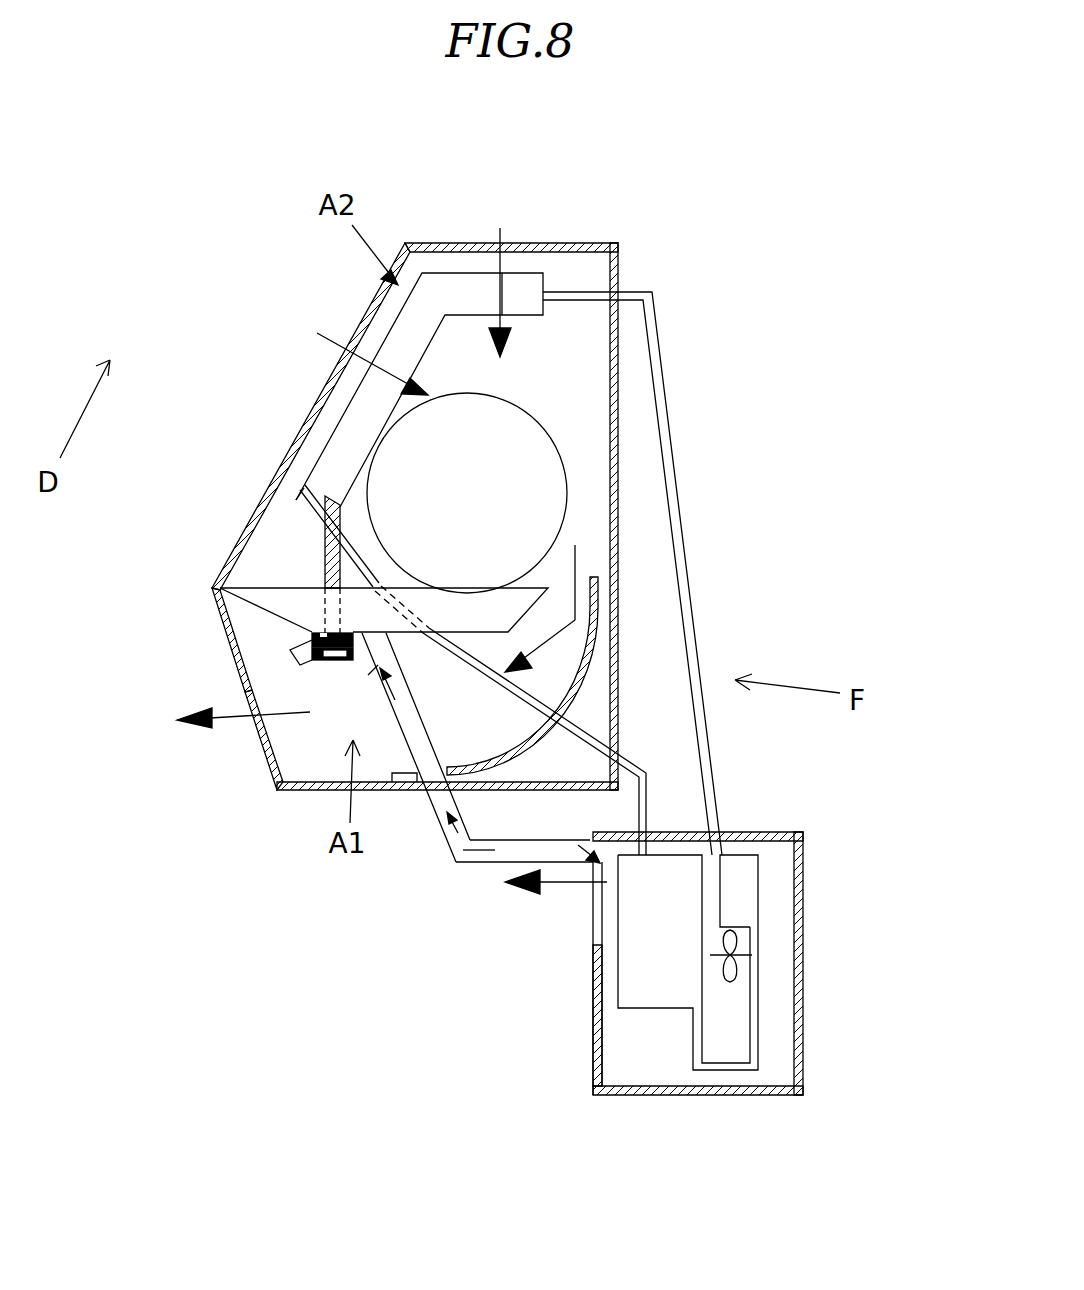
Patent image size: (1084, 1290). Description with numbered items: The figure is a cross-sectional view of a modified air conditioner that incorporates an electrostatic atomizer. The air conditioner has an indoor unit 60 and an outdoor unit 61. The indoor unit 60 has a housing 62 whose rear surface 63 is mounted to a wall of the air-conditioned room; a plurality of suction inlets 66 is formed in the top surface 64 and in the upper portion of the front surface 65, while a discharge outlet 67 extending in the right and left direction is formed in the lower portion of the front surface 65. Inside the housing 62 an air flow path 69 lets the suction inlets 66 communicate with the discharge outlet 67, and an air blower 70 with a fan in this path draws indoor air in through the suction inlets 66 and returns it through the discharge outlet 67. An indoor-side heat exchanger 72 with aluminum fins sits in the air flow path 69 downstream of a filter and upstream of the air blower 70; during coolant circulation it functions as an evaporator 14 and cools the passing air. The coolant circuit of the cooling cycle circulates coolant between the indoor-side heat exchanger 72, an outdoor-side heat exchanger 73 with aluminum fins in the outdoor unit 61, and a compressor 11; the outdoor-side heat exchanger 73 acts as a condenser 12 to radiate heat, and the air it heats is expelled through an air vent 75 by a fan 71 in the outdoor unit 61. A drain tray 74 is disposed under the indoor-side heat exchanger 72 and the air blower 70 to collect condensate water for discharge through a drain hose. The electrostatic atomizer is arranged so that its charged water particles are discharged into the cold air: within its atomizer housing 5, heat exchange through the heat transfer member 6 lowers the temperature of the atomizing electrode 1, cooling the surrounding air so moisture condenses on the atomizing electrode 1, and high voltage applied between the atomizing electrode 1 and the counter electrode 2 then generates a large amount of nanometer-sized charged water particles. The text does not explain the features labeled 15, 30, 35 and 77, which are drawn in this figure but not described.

The atomizing electrode 1 is at (313, 663).
The counter electrode 2 is at (312, 662).
The atomizer housing 5 is at (307, 637).
The heat transfer member 6 is at (318, 487).
The compressor 11 is at (752, 880).
The condenser 12 is at (623, 975).
The evaporator 14 is at (520, 283).
The mist discharge port 15 is at (335, 663).
The housing corner portion 30 is at (220, 588).
The air return duct 35 is at (445, 842).
The indoor unit 60 is at (303, 787).
The outdoor unit 61 is at (593, 1080).
The housing 62 is at (275, 773).
The rear surface 63 is at (618, 342).
The top surface 64 is at (418, 243).
The front surface 65 is at (273, 478).
The suction inlets 66 is at (493, 243).
The discharge outlet 67 is at (242, 668).
The air flow path 69 is at (450, 727).
The air blower 70 is at (540, 465).
The fan 71 is at (733, 968).
The indoor-side heat exchanger 72 is at (540, 287).
The outdoor-side heat exchanger 73 is at (632, 995).
The drain tray 74 is at (297, 587).
The air vent 75 is at (592, 913).
The curved guide wall 77 is at (588, 598).